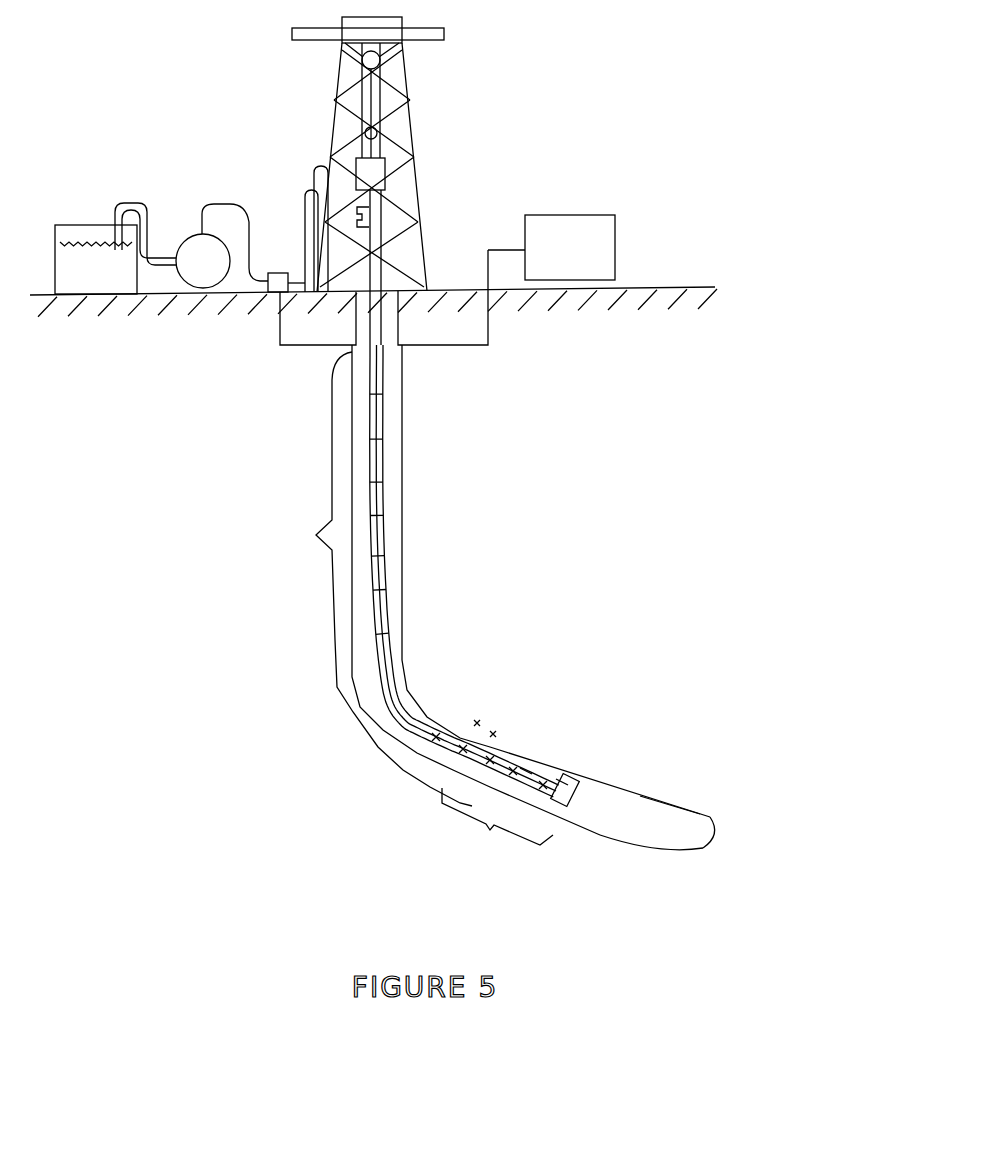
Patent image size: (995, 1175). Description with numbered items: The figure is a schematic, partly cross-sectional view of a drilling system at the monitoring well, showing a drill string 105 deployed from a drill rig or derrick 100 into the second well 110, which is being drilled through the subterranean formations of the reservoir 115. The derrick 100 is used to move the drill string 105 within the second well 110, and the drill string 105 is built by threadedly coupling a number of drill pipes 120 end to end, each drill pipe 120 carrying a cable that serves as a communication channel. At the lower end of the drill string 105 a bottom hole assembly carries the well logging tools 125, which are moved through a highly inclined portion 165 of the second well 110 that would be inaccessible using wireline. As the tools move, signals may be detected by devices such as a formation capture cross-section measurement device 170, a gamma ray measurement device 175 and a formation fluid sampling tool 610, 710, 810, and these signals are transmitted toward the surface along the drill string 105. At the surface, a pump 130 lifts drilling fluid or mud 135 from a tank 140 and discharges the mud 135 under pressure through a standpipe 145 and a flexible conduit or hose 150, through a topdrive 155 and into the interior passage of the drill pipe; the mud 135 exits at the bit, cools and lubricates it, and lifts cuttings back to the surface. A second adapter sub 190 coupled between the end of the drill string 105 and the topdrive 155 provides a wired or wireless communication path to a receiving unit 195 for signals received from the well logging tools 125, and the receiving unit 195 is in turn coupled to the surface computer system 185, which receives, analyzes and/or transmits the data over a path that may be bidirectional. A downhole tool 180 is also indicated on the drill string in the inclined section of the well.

The drill rig 100 is at (418, 76).
The drill string 105 is at (364, 579).
The second well 110 is at (412, 527).
The subterranean formations of the reservoir 115 is at (527, 560).
The drill pipe 120 is at (388, 417).
The well logging tools 125 is at (510, 819).
The pump 130 is at (190, 273).
The drilling fluid (mud) 135 is at (83, 286).
The tank 140 is at (83, 224).
The standpipe 145 is at (302, 218).
The flexible conduit 150 is at (312, 168).
The topdrive 155 is at (391, 180).
The highly inclined portion 165 is at (630, 786).
The formation capture cross-section measurement device 170 is at (566, 780).
The gamma ray measurement device 175 is at (529, 769).
The downhole tool 180 is at (443, 731).
The surface computer system 185 is at (555, 263).
The second adapter sub 190 is at (388, 215).
The receiving unit 195 is at (270, 297).
The formation fluid sampling tool 610 is at (565, 729).
The formation fluid sampling tool 710 is at (503, 753).
The formation fluid sampling tool 810 is at (543, 785).